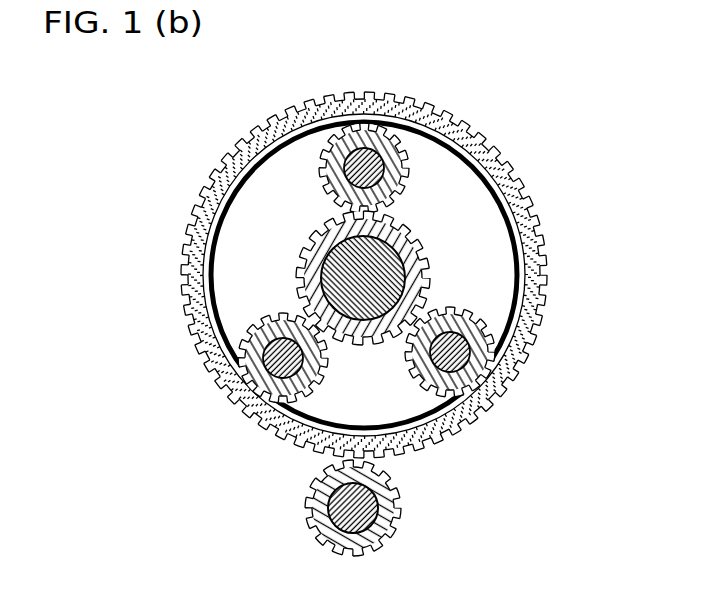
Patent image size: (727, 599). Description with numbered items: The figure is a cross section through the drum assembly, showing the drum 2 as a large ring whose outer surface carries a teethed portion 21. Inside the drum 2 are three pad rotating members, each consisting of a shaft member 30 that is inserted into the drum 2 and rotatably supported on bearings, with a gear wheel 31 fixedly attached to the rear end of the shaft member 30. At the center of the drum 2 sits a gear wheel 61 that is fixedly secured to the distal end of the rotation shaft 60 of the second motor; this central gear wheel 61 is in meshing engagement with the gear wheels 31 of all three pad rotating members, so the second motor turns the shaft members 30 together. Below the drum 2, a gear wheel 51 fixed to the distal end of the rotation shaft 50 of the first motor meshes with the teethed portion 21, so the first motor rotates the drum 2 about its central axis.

The drum 2 is at (488, 408).
The teethed portion 21 is at (386, 461).
The shaft member 30 is at (388, 165).
The gear wheel 31 is at (384, 172).
The rotation shaft 50 is at (347, 501).
The gear wheel 51 is at (325, 476).
The rotation shaft 60 is at (333, 224).
The gear wheel 61 is at (327, 253).